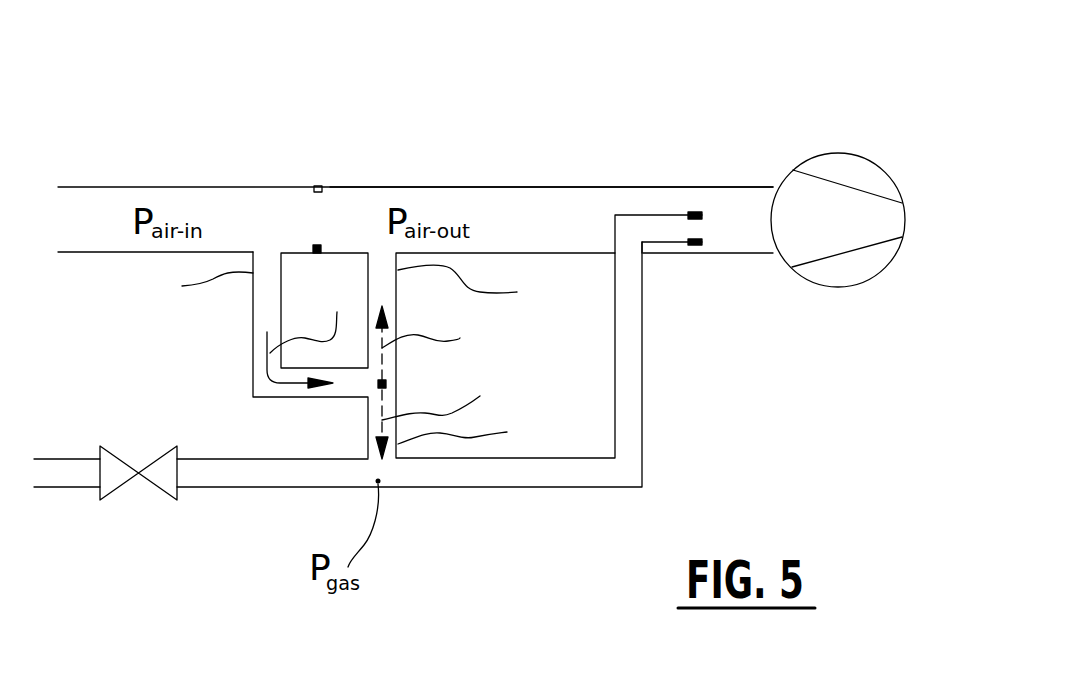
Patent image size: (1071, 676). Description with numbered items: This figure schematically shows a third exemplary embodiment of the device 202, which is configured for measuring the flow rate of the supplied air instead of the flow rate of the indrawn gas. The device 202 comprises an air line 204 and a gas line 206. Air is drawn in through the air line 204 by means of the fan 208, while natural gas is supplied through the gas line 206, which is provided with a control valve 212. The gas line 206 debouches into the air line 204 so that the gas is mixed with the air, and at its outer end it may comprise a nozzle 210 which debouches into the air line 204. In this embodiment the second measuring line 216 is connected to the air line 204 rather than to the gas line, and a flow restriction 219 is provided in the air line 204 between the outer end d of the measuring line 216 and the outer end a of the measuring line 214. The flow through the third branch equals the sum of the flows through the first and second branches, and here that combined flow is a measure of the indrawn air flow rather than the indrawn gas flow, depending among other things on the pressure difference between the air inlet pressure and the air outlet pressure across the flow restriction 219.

The device 202 is at (543, 166).
The air line 204 is at (428, 186).
The gas line 206 is at (497, 488).
The fan 208 is at (850, 155).
The nozzle 210 is at (697, 212).
The control valve 212 is at (115, 473).
The measuring line 214 is at (422, 366).
The second measuring line 216 is at (253, 342).
The flow restriction 219 is at (318, 186).